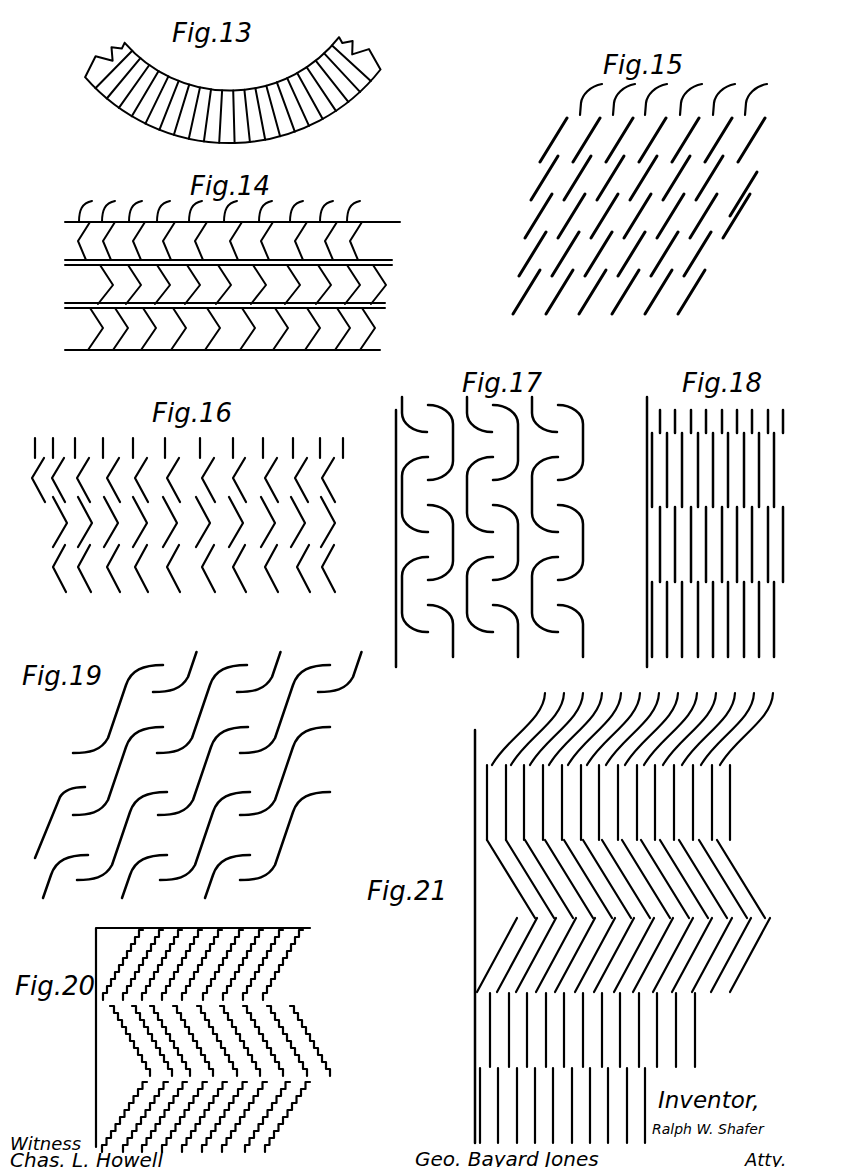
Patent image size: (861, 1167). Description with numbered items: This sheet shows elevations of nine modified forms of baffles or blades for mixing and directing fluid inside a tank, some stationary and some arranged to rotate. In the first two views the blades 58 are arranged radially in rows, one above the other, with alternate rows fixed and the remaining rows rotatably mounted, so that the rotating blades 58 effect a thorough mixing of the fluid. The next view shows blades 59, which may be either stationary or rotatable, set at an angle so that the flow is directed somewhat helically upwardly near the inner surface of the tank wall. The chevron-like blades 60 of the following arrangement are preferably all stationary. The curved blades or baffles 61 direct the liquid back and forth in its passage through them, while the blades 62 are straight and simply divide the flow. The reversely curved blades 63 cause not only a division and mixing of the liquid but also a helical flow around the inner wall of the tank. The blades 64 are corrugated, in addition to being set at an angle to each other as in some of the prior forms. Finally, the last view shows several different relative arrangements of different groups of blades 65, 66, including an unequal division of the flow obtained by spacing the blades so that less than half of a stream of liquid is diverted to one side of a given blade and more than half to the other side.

In FIG. 13, the blades 58 is at (330, 108).
In FIG. 14, the blades 58 is at (352, 229).
In FIG. 15, the blades 59 is at (703, 242).
In FIG. 16, the blades 60 is at (338, 531).
In FIG. 17, the curved blades or baffles 61 is at (583, 466).
In FIG. 18, the blades 62 is at (783, 582).
In FIG. 19, the blades 63 is at (65, 787).
In FIG. 20, the blades 64 is at (285, 1037).
In FIG. 21, the blades 65 is at (697, 1020).
In FIG. 21, the blades 66 is at (748, 733).